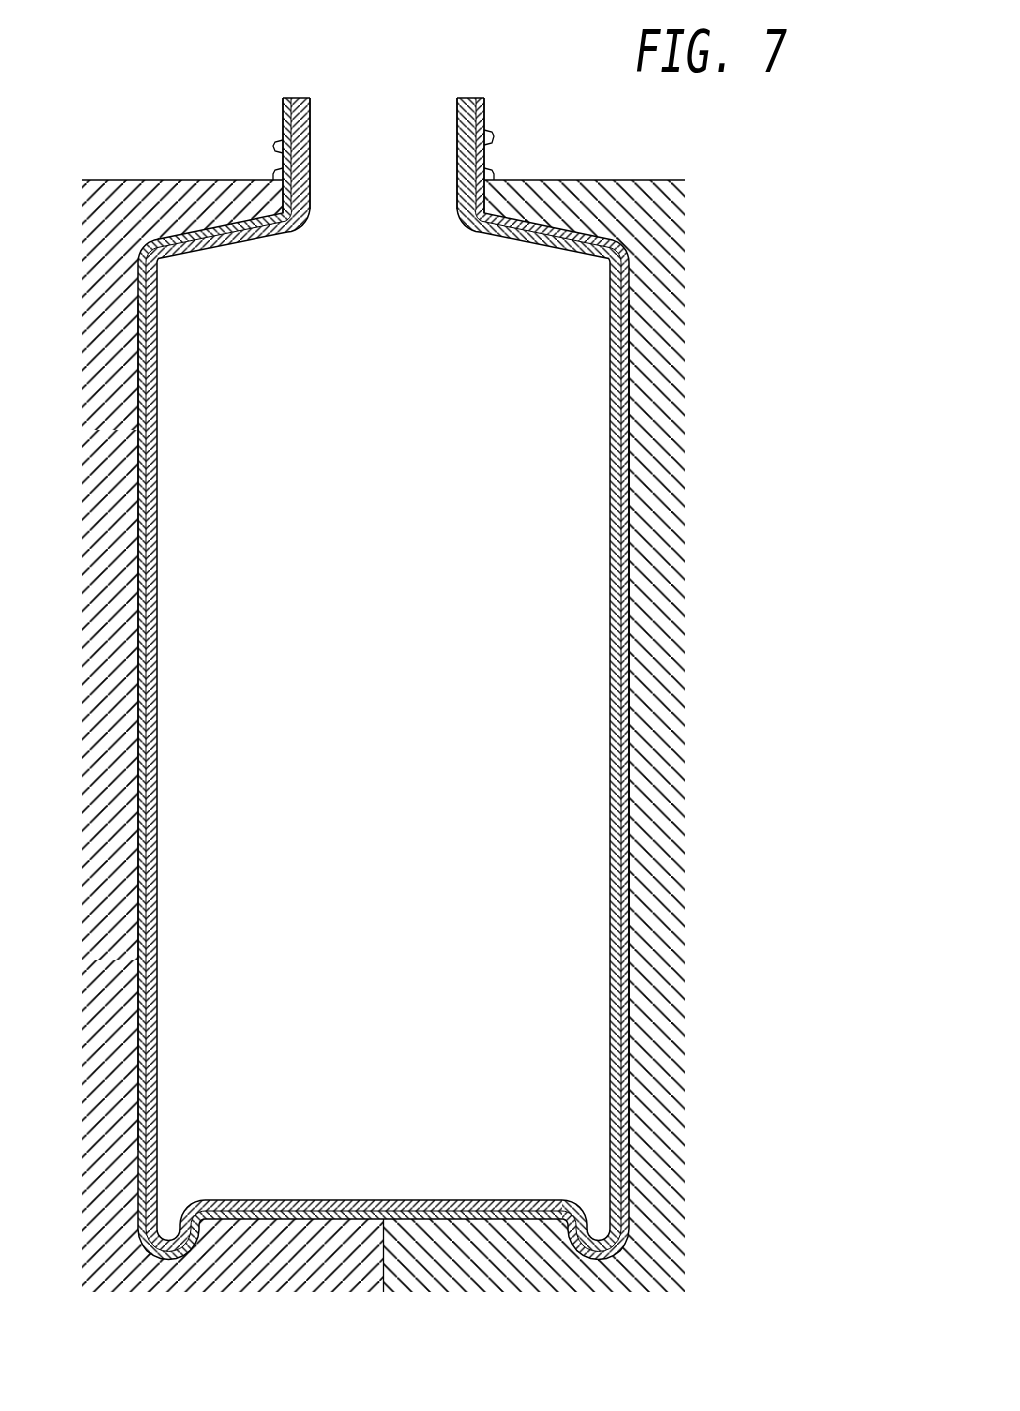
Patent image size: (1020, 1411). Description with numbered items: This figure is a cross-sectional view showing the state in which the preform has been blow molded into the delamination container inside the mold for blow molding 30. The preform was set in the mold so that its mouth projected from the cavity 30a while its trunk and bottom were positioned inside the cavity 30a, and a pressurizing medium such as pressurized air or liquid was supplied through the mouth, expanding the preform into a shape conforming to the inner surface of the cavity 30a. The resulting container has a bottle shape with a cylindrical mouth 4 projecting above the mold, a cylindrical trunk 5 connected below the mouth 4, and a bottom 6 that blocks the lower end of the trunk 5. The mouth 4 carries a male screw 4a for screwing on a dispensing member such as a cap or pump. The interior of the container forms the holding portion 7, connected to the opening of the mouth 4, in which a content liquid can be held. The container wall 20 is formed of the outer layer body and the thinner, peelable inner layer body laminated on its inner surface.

The mouth 4 is at (484, 159).
The male screw 4a is at (491, 134).
The trunk 5 is at (630, 452).
The bottom 6 is at (423, 1218).
The holding portion 7 is at (393, 838).
The side wall of body portion 20 is at (147, 948).
The mold for blow molding 30 is at (622, 180).
The cavity 30a is at (614, 675).